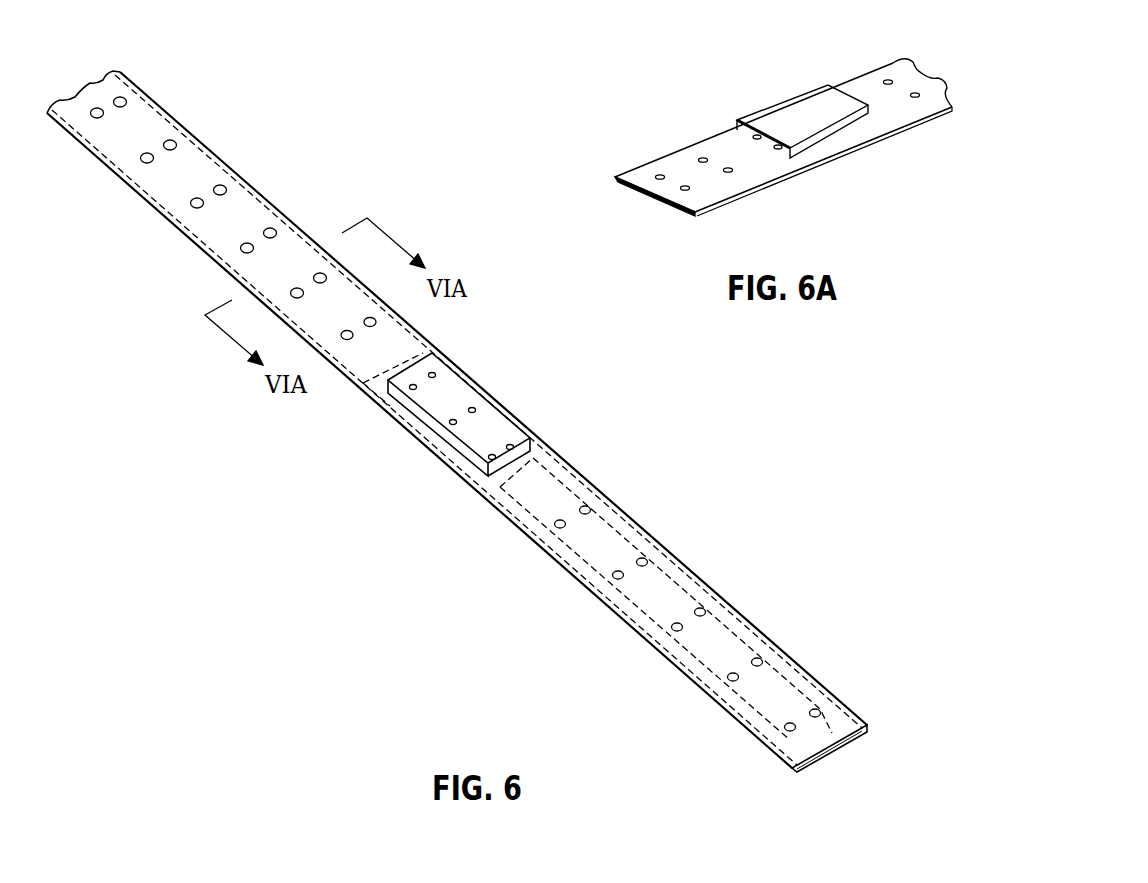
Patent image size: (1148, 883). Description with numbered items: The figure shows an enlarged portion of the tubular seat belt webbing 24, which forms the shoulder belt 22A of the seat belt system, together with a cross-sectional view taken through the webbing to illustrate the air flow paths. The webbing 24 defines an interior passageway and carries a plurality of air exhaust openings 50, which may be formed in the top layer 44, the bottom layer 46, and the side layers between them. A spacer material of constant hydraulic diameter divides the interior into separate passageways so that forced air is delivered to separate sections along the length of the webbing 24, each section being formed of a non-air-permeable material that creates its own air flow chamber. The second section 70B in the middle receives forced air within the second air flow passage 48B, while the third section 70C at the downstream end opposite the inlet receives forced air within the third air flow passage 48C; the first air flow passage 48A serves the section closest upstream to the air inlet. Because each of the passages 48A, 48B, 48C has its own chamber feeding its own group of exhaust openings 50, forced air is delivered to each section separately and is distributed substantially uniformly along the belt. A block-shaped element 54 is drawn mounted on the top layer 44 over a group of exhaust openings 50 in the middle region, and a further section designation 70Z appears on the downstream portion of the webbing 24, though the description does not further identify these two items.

In FIG. 6, the seat belt webbing 24 is at (170, 188).
In FIG. 6A, the seat belt webbing 24 is at (868, 87).
In FIG. 6, the air exhaust openings 50 is at (272, 229).
In FIG. 6A, the air exhaust openings 50 is at (705, 157).
In FIG. 6, the block 54 is at (452, 380).
In FIG. 6A, the block 54 is at (802, 98).
In FIG. 6, the top layer 44 is at (780, 690).
In FIG. 6A, the top layer 44 is at (675, 162).
In FIG. 6, the bottom layer 46 is at (800, 768).
In FIG. 6A, the bottom layer 46 is at (628, 193).
In FIG. 6, the first air flow passage 48A is at (725, 643).
In FIG. 6, the second air flow passage 48B is at (475, 462).
In FIG. 6, the third air flow passage 48C is at (227, 232).
In FIG. 6A, the third air flow passage 48C is at (653, 194).
In FIG. 6, the third section 70C is at (311, 212).
In FIG. 6, the second section 70B is at (502, 379).
In FIG. 6, the section portion 70Z is at (726, 577).
In FIG. 6A, the shoulder belt 22A is at (637, 167).